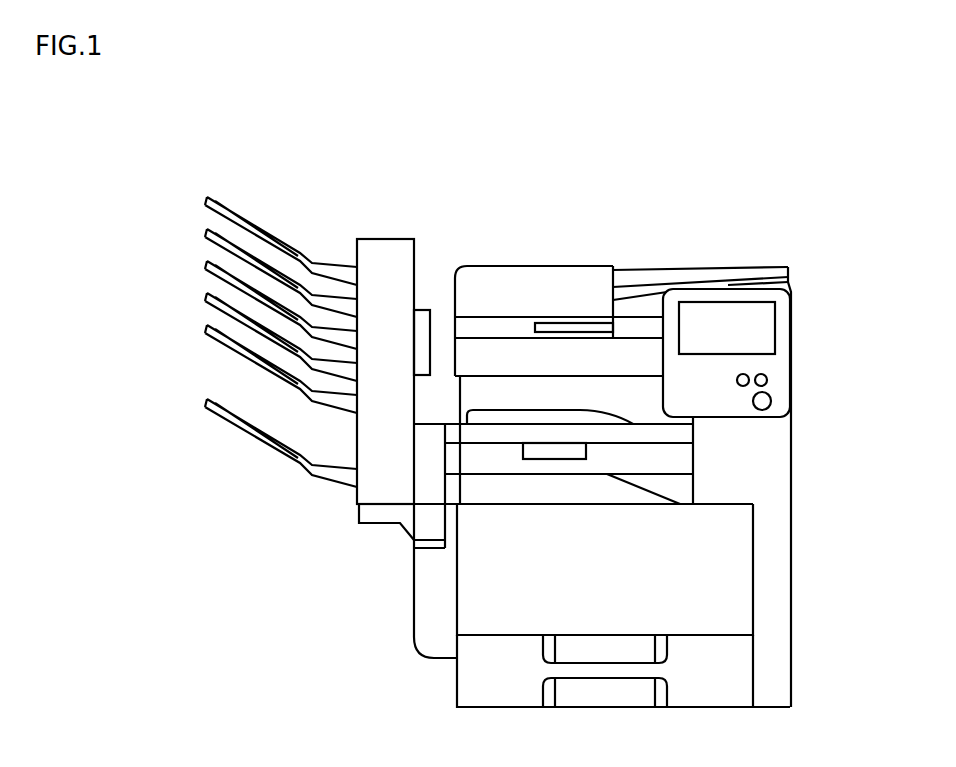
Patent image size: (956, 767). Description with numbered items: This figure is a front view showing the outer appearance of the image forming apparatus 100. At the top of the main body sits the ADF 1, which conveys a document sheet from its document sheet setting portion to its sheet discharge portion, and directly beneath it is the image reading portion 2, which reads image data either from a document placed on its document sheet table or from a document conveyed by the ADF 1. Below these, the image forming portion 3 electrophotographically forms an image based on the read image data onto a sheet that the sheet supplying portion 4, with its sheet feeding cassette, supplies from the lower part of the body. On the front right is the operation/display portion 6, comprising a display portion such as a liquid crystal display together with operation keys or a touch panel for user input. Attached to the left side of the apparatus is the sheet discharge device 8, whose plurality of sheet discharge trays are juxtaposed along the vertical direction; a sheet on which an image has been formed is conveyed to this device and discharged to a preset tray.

The image forming apparatus 100 is at (790, 222).
The ADF 1 is at (545, 266).
The image reading portion 2 is at (492, 357).
The image forming portion 3 is at (755, 568).
The sheet supplying portion 4 is at (755, 668).
The operation/display portion 6 is at (737, 418).
The sheet discharge device 8 is at (385, 239).